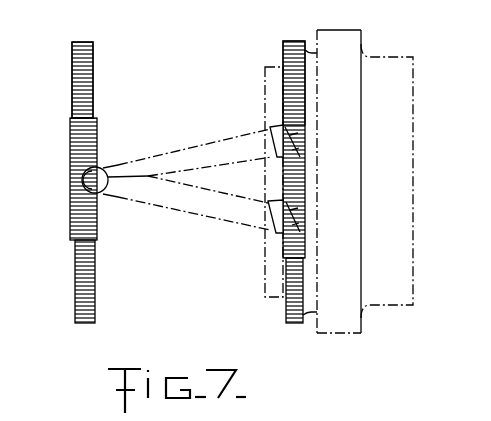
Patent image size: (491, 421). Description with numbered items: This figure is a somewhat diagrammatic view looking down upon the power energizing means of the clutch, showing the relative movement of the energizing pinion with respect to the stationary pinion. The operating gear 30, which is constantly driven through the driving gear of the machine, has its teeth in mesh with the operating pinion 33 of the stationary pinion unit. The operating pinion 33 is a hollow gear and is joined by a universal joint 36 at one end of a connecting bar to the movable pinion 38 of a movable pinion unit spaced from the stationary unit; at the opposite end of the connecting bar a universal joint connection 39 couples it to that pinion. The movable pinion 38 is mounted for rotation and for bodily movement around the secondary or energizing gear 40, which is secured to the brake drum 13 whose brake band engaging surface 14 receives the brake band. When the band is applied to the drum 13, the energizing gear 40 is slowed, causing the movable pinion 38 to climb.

The brake drum 13 is at (400, 165).
The brake band engaging surface 14 is at (344, 45).
The operating gear 30 is at (96, 271).
The operating pinion 33 is at (88, 141).
The universal joint 36 is at (75, 197).
The movable pinion 38 is at (305, 178).
The universal joint connection 39 is at (303, 222).
The energizing gear 40 is at (305, 93).